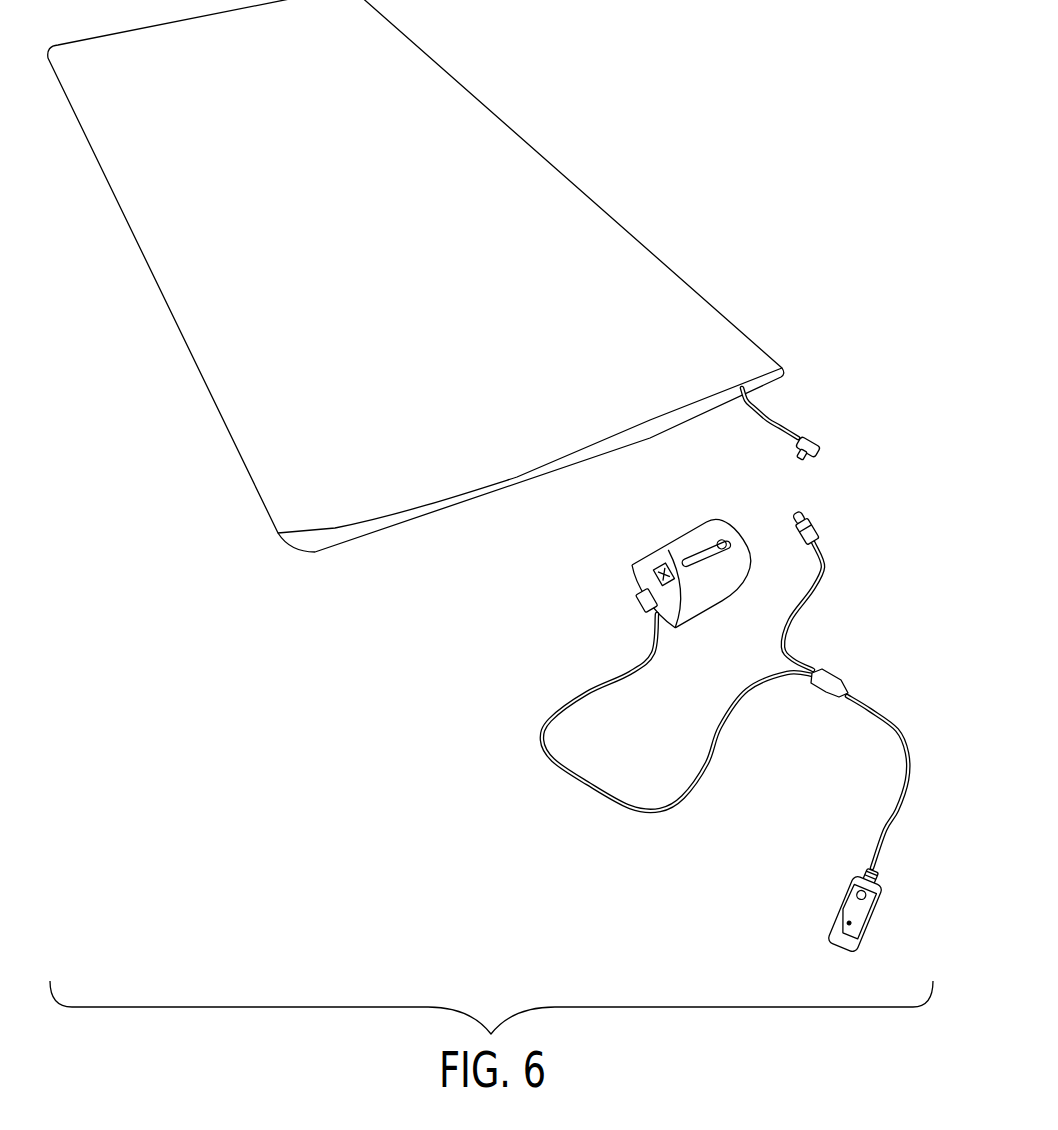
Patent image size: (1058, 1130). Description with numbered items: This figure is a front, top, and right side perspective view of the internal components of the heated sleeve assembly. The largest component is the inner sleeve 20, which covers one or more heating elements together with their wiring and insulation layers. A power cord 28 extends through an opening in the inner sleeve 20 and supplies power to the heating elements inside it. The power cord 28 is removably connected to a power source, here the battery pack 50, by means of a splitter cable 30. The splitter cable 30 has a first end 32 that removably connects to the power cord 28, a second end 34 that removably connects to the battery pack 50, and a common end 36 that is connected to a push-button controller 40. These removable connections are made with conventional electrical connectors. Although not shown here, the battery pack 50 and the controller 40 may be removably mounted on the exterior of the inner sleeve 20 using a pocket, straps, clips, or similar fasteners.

The inner sleeve 20 is at (168, 275).
The power cord 28 is at (795, 428).
The splitter cable 30 is at (903, 626).
The first end 32 is at (830, 567).
The second end 34 is at (582, 780).
The common end 36 is at (897, 730).
The push-button controller 40 is at (873, 923).
The battery pack 50 is at (632, 566).